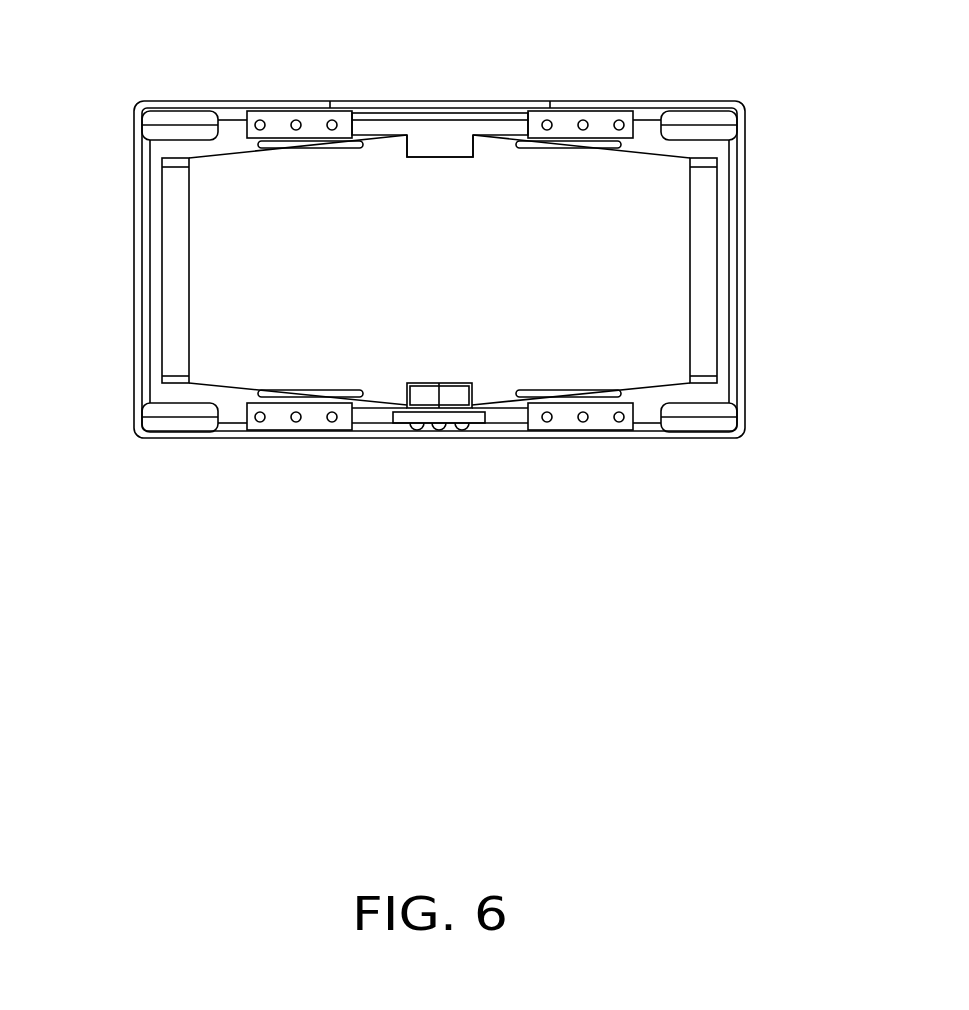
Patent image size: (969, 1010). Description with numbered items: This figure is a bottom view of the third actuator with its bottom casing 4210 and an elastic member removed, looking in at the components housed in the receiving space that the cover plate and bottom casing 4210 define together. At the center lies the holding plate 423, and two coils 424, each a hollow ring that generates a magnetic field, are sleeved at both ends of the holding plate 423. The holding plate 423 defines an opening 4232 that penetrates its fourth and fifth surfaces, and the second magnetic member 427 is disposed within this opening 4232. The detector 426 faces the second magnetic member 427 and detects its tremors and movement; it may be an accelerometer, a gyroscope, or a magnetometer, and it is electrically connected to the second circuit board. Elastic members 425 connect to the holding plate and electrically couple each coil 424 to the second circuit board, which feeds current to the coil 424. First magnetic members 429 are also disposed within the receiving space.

The bottom casing 4210 is at (136, 150).
The holding plate 423 is at (376, 162).
The opening 4232 is at (441, 144).
The coil 424 is at (700, 260).
The elastic member 425 is at (317, 415).
The detector 426 is at (425, 418).
The second magnetic member 427 is at (462, 397).
The first magnetic member 429 is at (180, 420).